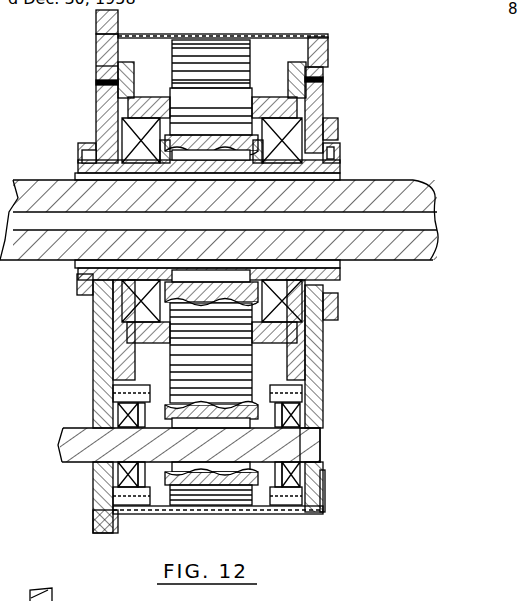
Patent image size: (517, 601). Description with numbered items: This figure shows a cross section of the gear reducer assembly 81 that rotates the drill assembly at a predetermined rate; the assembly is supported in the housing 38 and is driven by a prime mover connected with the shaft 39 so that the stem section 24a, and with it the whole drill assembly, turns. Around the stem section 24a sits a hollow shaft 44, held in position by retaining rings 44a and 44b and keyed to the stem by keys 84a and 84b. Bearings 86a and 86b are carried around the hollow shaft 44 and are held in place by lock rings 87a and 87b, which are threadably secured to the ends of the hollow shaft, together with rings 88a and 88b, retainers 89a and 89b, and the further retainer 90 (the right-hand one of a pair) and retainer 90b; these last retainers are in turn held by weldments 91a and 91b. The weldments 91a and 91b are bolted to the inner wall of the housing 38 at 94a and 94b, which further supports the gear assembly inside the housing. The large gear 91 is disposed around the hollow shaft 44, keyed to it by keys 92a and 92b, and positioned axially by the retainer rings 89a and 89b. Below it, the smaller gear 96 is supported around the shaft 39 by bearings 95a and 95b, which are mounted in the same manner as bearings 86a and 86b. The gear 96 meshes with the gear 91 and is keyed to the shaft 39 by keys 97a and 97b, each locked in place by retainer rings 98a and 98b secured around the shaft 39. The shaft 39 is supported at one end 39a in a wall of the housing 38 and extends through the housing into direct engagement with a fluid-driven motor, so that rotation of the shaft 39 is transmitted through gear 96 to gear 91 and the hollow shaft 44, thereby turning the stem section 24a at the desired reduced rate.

The housing 38 is at (96, 19).
The bolted connection point 94b is at (97, 68).
The weldment 91b is at (115, 100).
The retainer 90b is at (143, 97).
The bearing 86b is at (130, 137).
The lock ring 87b is at (78, 147).
The ring 88b is at (97, 152).
The key 84a is at (313, 180).
The gear reducer assembly 81 is at (300, 29).
The bolted connection point 94a is at (327, 40).
The weldment 91a is at (320, 88).
The retainer 90 is at (262, 97).
The bearing 86a is at (297, 128).
The ring 88a is at (338, 140).
The lock ring 87a is at (338, 152).
The gear 91 is at (202, 87).
The key 92a is at (228, 147).
The stem section 24a is at (387, 195).
The retaining ring 44a is at (343, 263).
The key 84b is at (345, 243).
The retaining ring 44b is at (77, 268).
The retainer ring 89b is at (162, 277).
The hollow shaft 44 is at (338, 298).
The retainer ring 89a is at (300, 312).
The key 92b is at (207, 277).
The bearing 95b is at (117, 400).
The retainer ring 98b is at (117, 408).
The key 97a is at (305, 398).
The bearing 95a is at (302, 413).
The retainer ring 98a is at (300, 422).
The shaft 39 is at (67, 460).
The shaft end 39a is at (297, 450).
The key 97b is at (322, 493).
The gear 96 is at (270, 512).